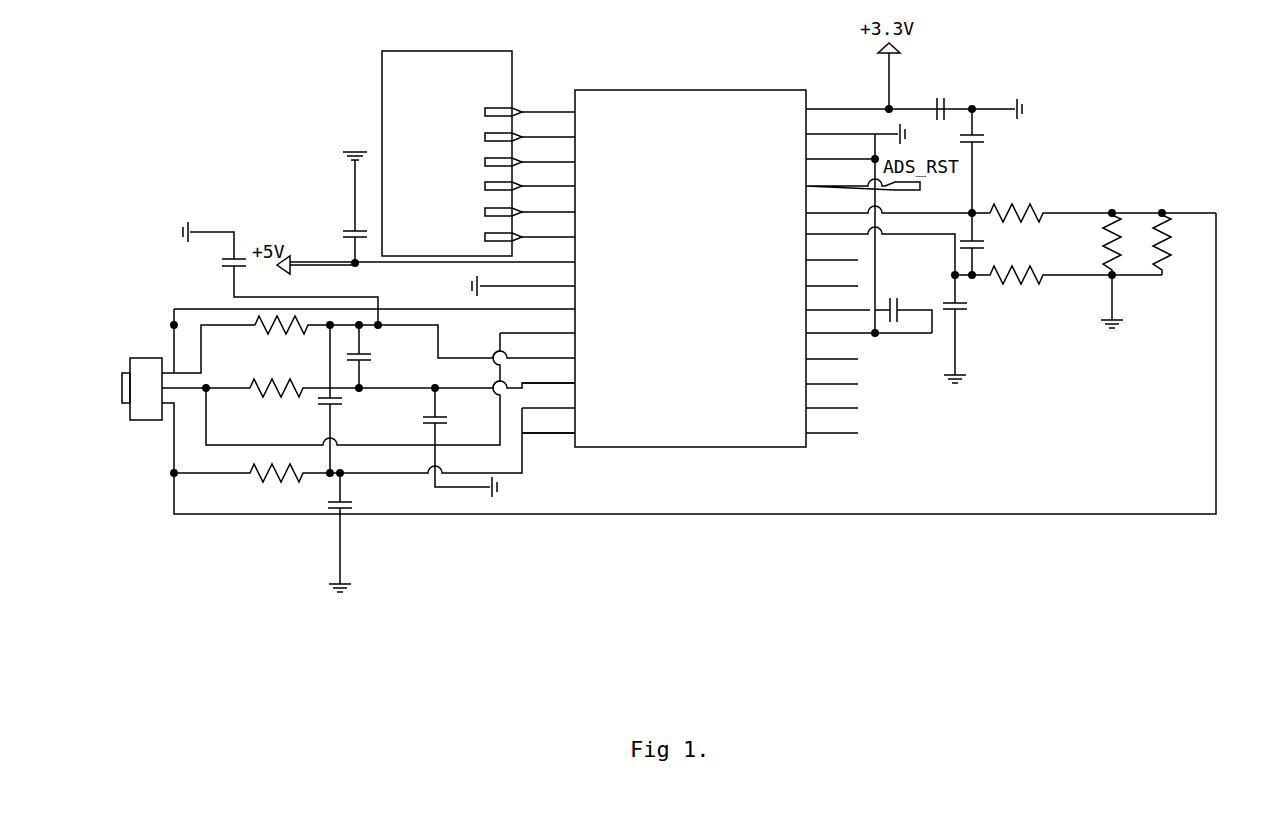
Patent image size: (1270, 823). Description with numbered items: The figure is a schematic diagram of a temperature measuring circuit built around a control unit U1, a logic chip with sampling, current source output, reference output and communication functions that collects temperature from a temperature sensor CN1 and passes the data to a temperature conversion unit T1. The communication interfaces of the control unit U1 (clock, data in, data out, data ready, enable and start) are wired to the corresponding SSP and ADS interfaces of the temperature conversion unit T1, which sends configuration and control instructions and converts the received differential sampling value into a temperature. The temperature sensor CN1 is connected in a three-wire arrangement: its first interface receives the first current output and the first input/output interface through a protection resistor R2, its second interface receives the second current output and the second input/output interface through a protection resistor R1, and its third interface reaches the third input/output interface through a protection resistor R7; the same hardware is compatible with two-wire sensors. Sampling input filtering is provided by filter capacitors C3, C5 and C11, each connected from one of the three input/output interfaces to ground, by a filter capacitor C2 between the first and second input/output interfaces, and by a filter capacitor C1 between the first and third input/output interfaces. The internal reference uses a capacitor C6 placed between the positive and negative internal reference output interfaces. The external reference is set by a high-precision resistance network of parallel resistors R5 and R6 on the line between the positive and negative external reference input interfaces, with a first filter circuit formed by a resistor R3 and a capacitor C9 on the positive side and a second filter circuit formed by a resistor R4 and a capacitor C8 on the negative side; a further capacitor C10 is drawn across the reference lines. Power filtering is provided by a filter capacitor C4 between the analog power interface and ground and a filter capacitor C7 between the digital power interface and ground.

The temperature conversion unit T1 is at (452, 153).
The control unit U1 is at (594, 267).
The temperature sensor CN1 is at (147, 407).
The resistor R1 is at (412, 400).
The resistor R2 is at (415, 338).
The resistor R3 is at (1103, 206).
The resistor R4 is at (1058, 269).
The resistor R5 is at (1099, 270).
The resistor R6 is at (1173, 244).
The resistor R7 is at (374, 455).
The filter capacitor C1 is at (337, 399).
The filter capacitor C2 is at (371, 356).
The filter capacitor C3 is at (280, 273).
The filter capacitor C4 is at (340, 207).
The filter capacitor C5 is at (460, 442).
The capacitor C6 is at (903, 328).
The filter capacitor C7 is at (937, 99).
The capacitor C8 is at (966, 329).
The capacitor C9 is at (983, 161).
The capacitor C10 is at (990, 244).
The filter capacitor C11 is at (358, 532).